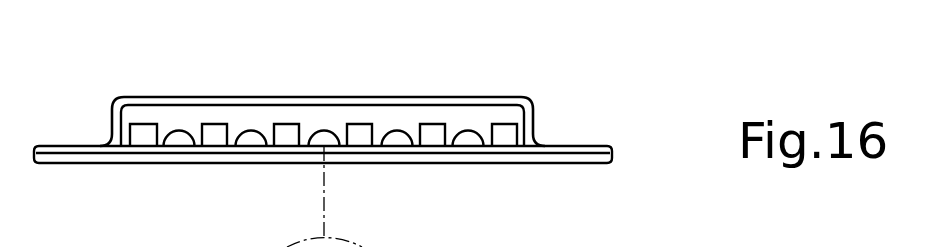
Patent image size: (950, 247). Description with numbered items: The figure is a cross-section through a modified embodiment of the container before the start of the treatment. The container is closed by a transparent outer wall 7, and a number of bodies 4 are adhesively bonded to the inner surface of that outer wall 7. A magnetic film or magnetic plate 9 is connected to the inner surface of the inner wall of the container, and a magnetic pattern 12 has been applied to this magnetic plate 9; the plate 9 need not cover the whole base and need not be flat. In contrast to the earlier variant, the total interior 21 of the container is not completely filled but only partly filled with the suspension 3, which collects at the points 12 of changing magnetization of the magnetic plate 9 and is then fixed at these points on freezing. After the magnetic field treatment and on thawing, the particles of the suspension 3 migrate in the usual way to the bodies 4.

The suspension 3 is at (179, 138).
The bodies 4 is at (214, 135).
The transparent outer wall 7 is at (375, 97).
The magnetic film 9 is at (150, 147).
The magnetic pattern 12 is at (252, 153).
The total interior 21 is at (427, 113).